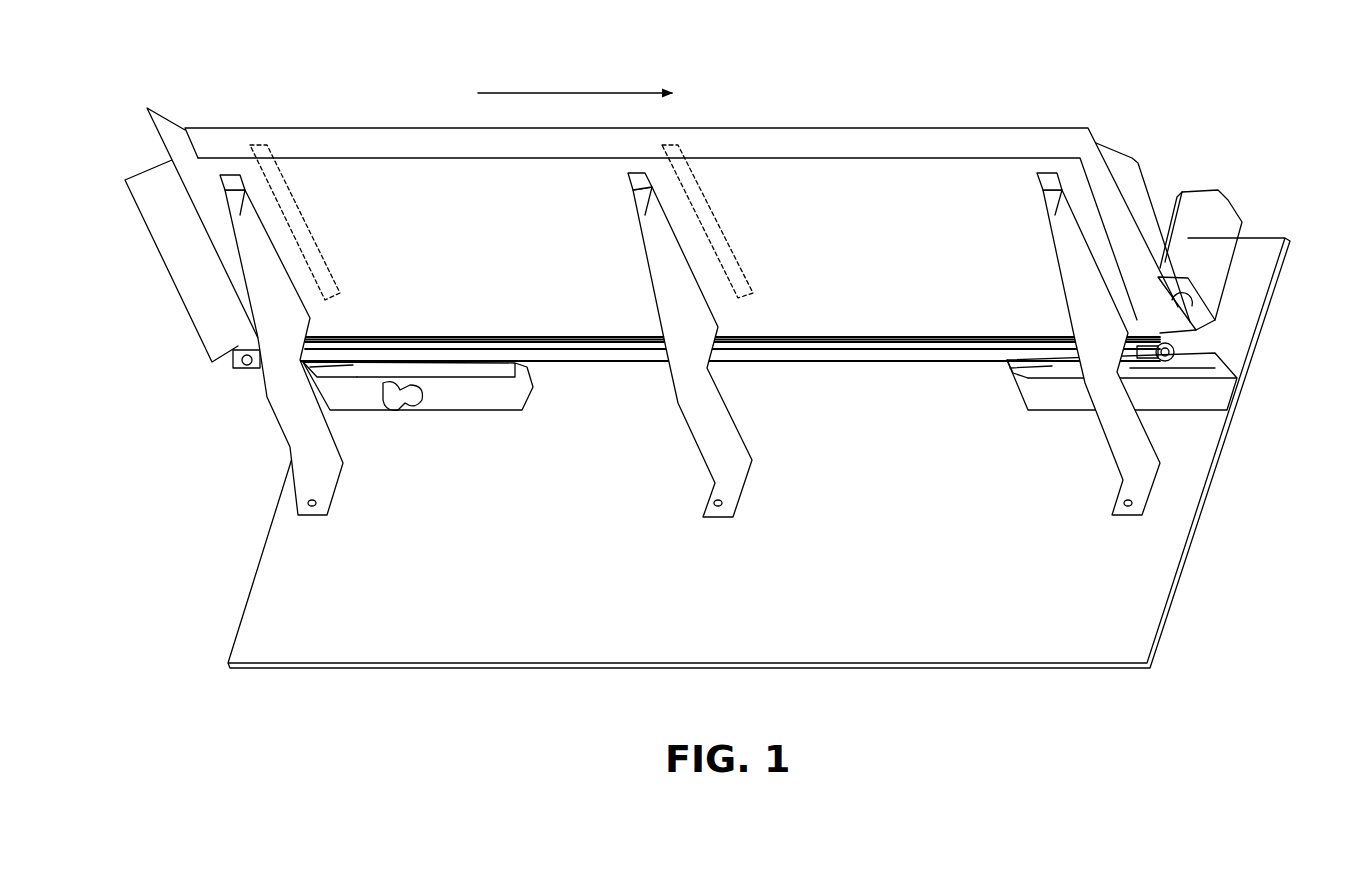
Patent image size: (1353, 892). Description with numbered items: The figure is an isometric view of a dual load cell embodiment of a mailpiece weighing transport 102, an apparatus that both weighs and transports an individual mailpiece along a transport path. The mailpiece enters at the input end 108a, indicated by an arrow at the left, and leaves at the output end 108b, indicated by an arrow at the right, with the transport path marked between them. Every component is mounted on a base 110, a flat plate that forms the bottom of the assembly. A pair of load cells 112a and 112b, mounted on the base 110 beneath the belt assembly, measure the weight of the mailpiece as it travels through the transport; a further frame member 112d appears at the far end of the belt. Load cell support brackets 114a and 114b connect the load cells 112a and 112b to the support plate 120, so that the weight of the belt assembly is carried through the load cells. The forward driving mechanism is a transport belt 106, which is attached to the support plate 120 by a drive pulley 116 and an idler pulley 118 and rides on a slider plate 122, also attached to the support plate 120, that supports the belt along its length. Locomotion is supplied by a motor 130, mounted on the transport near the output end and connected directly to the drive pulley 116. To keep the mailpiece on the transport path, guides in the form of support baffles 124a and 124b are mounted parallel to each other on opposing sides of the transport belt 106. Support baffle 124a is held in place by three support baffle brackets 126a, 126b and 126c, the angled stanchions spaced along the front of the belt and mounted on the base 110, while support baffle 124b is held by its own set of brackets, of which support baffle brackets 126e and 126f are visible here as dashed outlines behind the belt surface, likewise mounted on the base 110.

The mailpiece weighing transport 102 is at (860, 88).
The transport belt 106 is at (1180, 332).
The input end 108a is at (136, 154).
The output end 108b is at (1170, 190).
The base 110 is at (1153, 568).
The load cell 112a is at (1062, 403).
The load cell 112b is at (460, 402).
The frame rail 112d is at (1125, 155).
The load cell support bracket 114a is at (1028, 378).
The load cell support bracket 114b is at (338, 373).
The drive pulley 116 is at (1162, 362).
The idler pulley 118 is at (237, 358).
The support plate 120 is at (1200, 288).
The slider plate 122 is at (808, 352).
The support baffle 124a is at (437, 158).
The support baffle 124b is at (445, 127).
The support baffle bracket 126a is at (1082, 303).
The support baffle bracket 126b is at (697, 312).
The support baffle bracket 126c is at (286, 301).
The support baffle bracket 126e is at (735, 253).
The support baffle bracket 126f is at (330, 248).
The motor 130 is at (1228, 206).